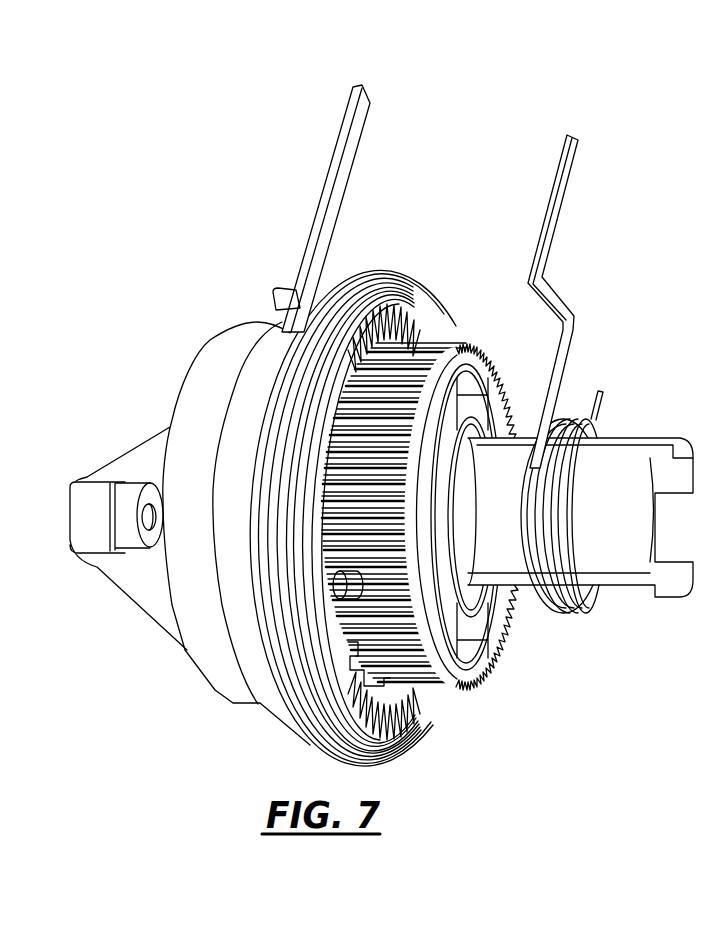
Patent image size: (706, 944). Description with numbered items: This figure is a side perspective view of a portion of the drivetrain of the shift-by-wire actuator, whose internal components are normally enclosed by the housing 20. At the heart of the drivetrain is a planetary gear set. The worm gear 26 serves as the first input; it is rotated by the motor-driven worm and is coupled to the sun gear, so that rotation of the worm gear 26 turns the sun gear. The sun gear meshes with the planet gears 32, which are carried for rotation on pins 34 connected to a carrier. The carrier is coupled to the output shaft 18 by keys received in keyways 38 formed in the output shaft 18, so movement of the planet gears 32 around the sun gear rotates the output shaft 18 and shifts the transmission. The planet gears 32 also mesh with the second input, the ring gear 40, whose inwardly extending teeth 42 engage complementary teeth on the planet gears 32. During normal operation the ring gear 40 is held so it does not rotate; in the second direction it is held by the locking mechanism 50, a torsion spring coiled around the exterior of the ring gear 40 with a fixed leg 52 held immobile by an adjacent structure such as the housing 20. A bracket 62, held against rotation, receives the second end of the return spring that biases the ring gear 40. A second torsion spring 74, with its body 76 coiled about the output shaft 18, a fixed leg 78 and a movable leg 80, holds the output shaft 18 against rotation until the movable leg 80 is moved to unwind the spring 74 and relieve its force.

The output shaft 18 is at (660, 596).
The housing 20 is at (697, 235).
The worm gear 26 is at (499, 657).
The planet gears 32 is at (392, 325).
The pins 34 is at (333, 588).
The keyways 38 is at (492, 582).
The ring gear 40 is at (407, 720).
The inwardly extending teeth 42 is at (407, 697).
The locking mechanism 50 is at (324, 755).
The fixed leg 52 is at (360, 118).
The bracket 62 is at (143, 593).
The torsion spring 74 is at (576, 614).
The body 76 is at (590, 427).
The fixed leg 78 is at (597, 390).
The movable leg 80 is at (552, 210).